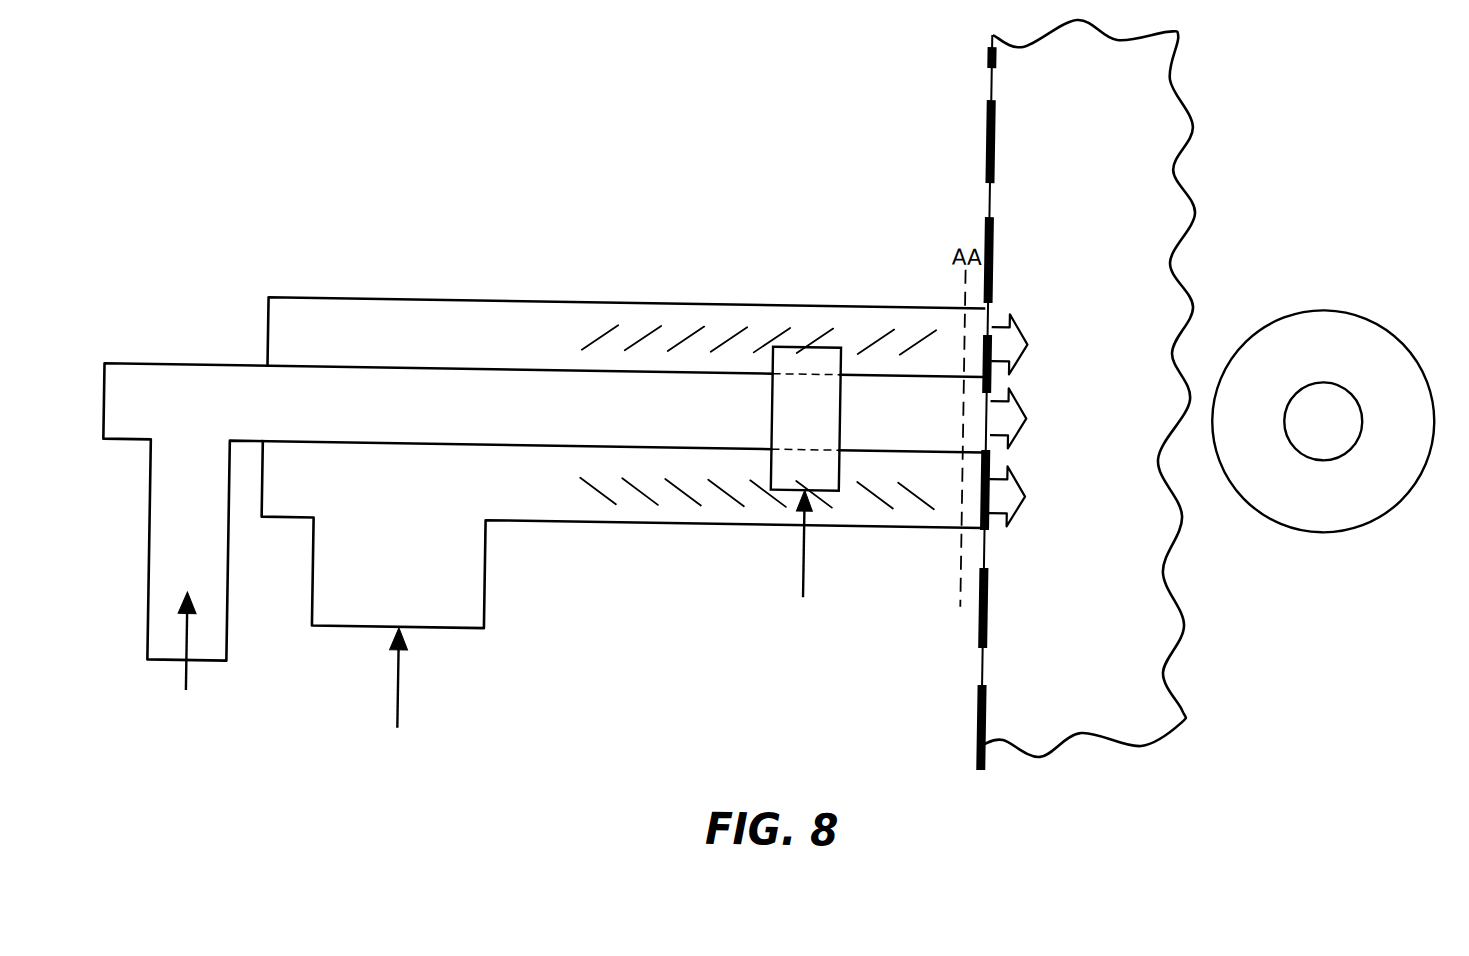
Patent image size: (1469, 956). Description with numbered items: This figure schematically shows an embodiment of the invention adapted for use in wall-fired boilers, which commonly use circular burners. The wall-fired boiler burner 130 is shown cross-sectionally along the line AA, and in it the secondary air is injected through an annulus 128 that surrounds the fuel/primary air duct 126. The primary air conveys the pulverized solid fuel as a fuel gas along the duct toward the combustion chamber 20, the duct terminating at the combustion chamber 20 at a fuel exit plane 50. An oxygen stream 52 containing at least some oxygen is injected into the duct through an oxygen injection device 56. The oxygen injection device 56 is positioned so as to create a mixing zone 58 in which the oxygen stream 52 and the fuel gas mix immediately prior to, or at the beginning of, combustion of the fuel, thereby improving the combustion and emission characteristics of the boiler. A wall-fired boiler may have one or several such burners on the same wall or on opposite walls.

The combustion chamber 20 is at (1098, 417).
The fuel exit plane 50 is at (983, 743).
The oxygen stream 52 is at (808, 584).
The oxygen injection device 56 is at (800, 350).
The mixing zone 58 is at (927, 427).
The fuel/primary air duct 126 is at (194, 690).
The annulus 128 is at (406, 722).
The wall-fired boiler burner 130 is at (1327, 305).